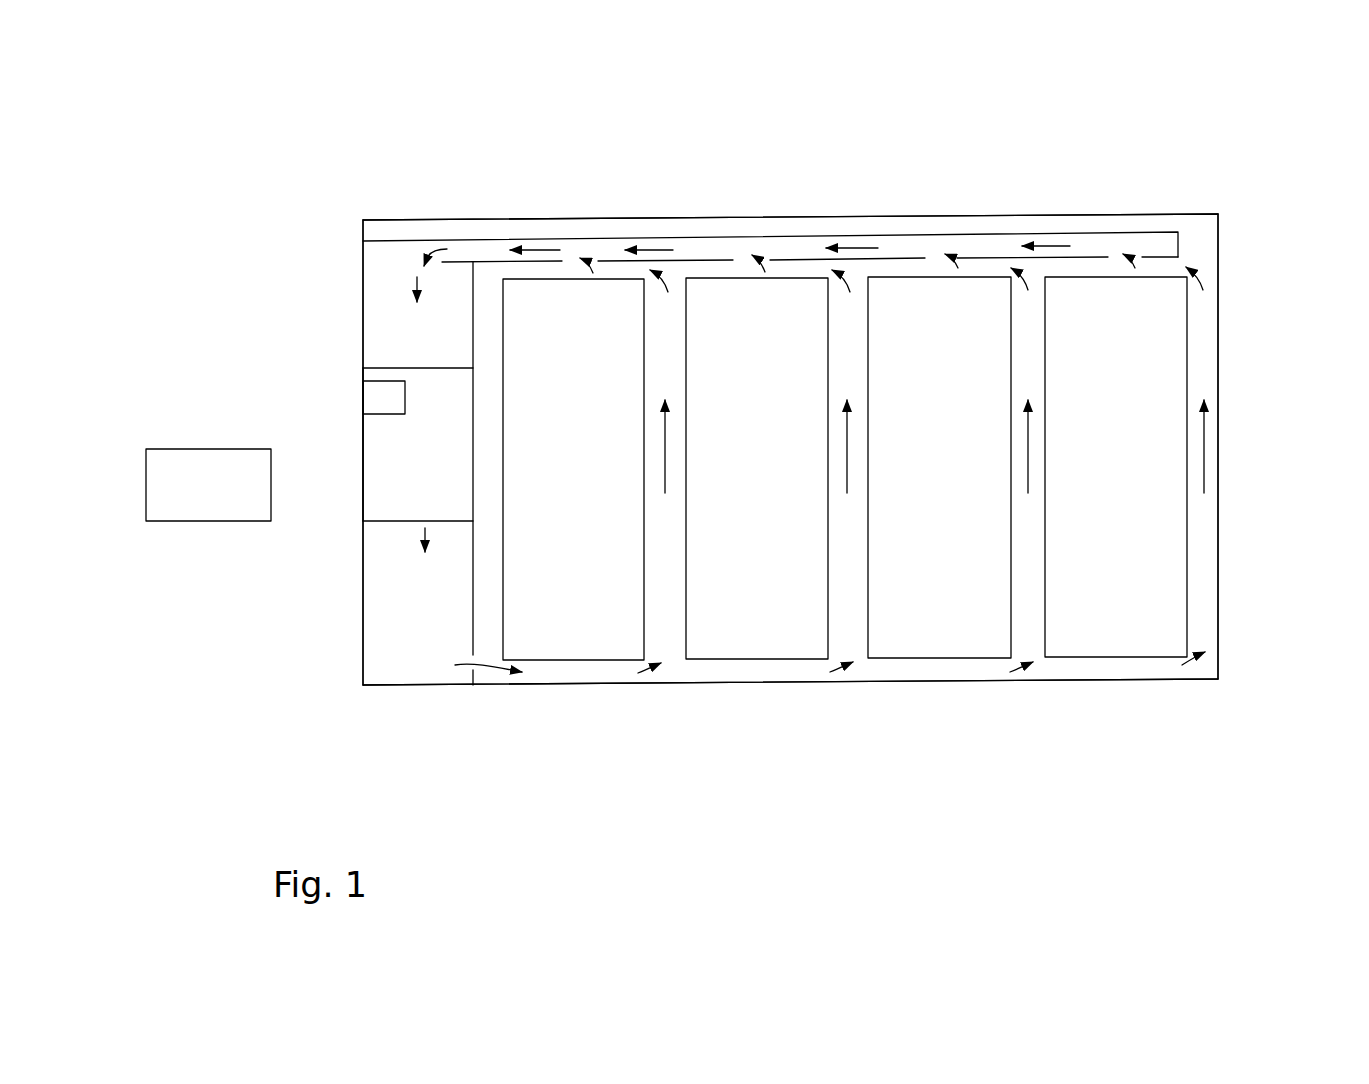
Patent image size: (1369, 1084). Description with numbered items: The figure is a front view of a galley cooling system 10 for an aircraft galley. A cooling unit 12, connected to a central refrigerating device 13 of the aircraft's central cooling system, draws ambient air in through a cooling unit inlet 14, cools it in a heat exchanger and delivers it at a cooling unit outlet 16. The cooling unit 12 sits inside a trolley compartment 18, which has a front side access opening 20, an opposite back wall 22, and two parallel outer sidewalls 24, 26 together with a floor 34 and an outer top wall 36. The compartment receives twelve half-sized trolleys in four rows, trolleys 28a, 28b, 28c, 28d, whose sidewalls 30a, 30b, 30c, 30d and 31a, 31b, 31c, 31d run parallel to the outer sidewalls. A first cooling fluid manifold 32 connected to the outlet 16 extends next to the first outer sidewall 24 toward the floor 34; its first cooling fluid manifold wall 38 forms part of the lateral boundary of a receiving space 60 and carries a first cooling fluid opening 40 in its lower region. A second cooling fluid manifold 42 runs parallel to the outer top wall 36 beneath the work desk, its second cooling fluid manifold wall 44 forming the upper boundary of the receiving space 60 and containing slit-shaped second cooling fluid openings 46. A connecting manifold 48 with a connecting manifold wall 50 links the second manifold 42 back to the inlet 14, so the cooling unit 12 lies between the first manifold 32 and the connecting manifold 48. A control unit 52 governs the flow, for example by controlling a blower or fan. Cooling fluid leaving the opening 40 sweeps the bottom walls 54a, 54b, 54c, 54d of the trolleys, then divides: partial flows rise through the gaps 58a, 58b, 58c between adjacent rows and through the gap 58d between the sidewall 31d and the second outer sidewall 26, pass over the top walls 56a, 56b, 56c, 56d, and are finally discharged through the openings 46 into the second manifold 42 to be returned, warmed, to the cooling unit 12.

The galley cooling system 10 is at (1088, 157).
The cooling unit 12 is at (397, 455).
The central refrigerating device 13 is at (191, 485).
The cooling unit inlet 14 is at (385, 360).
The cooling unit outlet 16 is at (398, 524).
The trolley compartment 18 is at (1220, 308).
The front side access opening 20 is at (1207, 604).
The back wall 22 is at (486, 295).
The first outer sidewall 24 is at (363, 649).
The second outer sidewall 26 is at (1222, 420).
The trolleys 28a is at (596, 568).
The trolleys 28b is at (782, 568).
The trolleys 28c is at (968, 568).
The trolleys 28d is at (1149, 568).
The sidewall 30a is at (427, 584).
The sidewall 30b is at (686, 623).
The sidewall 30c is at (868, 623).
The sidewall 30d is at (1045, 623).
The sidewall 31a is at (649, 367).
The sidewall 31b is at (831, 367).
The sidewall 31c is at (1015, 365).
The sidewall 31d is at (1185, 545).
The first cooling fluid manifold 32 is at (397, 615).
The floor 34 is at (580, 683).
The outer top wall 36 is at (822, 215).
The first cooling fluid manifold wall 38 is at (473, 542).
The first cooling fluid opening 40 is at (473, 655).
The second cooling fluid manifold 42 is at (983, 233).
The second cooling fluid manifold wall 44 is at (686, 260).
The second cooling fluid opening 46 is at (562, 260).
The connecting manifold 48 is at (393, 278).
The connecting manifold wall 50 is at (473, 337).
The control unit 52 is at (381, 399).
The bottom wall 54a is at (587, 662).
The bottom wall 54b is at (758, 659).
The bottom wall 54c is at (940, 658).
The bottom wall 54d is at (1108, 657).
The top wall 56a is at (545, 280).
The top wall 56b is at (745, 278).
The top wall 56c is at (928, 277).
The top wall 56d is at (1110, 277).
The gap 58a is at (662, 527).
The gap 58b is at (845, 527).
The gap 58c is at (1028, 527).
The gap 58d is at (1210, 500).
The receiving space 60 is at (1205, 355).